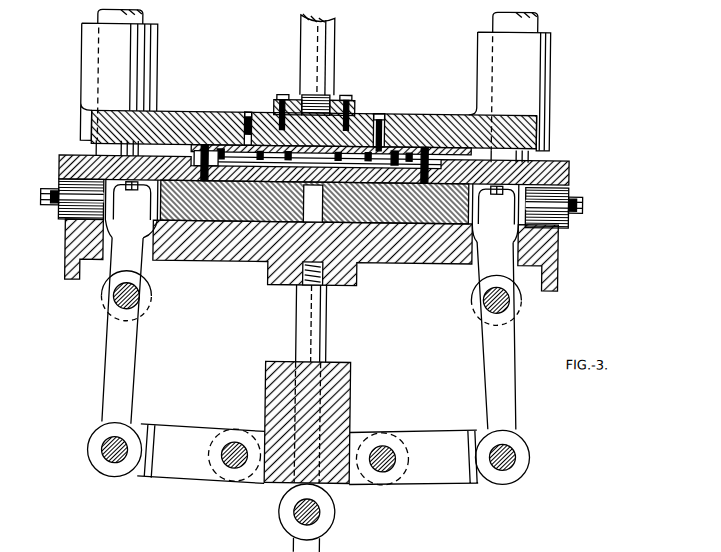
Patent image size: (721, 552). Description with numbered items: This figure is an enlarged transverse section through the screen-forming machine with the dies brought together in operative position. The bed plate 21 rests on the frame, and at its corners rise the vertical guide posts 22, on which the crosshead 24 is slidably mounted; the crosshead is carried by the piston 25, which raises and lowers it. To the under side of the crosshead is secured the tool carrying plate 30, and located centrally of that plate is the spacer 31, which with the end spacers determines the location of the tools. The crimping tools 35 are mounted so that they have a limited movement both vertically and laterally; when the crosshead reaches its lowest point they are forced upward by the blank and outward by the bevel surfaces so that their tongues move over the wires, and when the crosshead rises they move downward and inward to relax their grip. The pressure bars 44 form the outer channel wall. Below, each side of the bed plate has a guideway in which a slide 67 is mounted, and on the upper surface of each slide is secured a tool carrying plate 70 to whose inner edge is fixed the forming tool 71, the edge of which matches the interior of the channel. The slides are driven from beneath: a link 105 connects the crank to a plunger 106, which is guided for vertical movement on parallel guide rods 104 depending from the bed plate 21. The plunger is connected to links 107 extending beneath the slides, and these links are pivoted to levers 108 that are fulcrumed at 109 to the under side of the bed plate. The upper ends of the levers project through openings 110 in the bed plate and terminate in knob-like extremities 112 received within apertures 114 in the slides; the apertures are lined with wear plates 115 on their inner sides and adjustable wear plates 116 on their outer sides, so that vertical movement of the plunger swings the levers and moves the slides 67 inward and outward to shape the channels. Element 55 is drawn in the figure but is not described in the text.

The bed plate 21 is at (426, 263).
The vertical guide posts 22 is at (140, 22).
The crosshead 24 is at (160, 114).
The piston 25 is at (320, 52).
The tool carrying plate 30 is at (354, 155).
The spacer 31 is at (313, 165).
The crimping tools 35 is at (220, 150).
The pressure bars 44 is at (416, 165).
The die insert 55 is at (306, 222).
The slide 67 is at (216, 212).
The tool carrying plate 70 is at (60, 170).
The forming tool 71 is at (194, 160).
The guide rods 104 is at (318, 349).
The link 105 is at (318, 546).
The plunger 106 is at (346, 382).
The links 107 is at (177, 437).
The levers 108 is at (128, 360).
The fulcrum 109 is at (118, 305).
The openings 110 is at (104, 250).
The knob-like extremities 112 is at (312, 211).
The apertures 114 is at (105, 222).
The wear plates 115 is at (134, 191).
The adjustable wear plates 116 is at (128, 191).